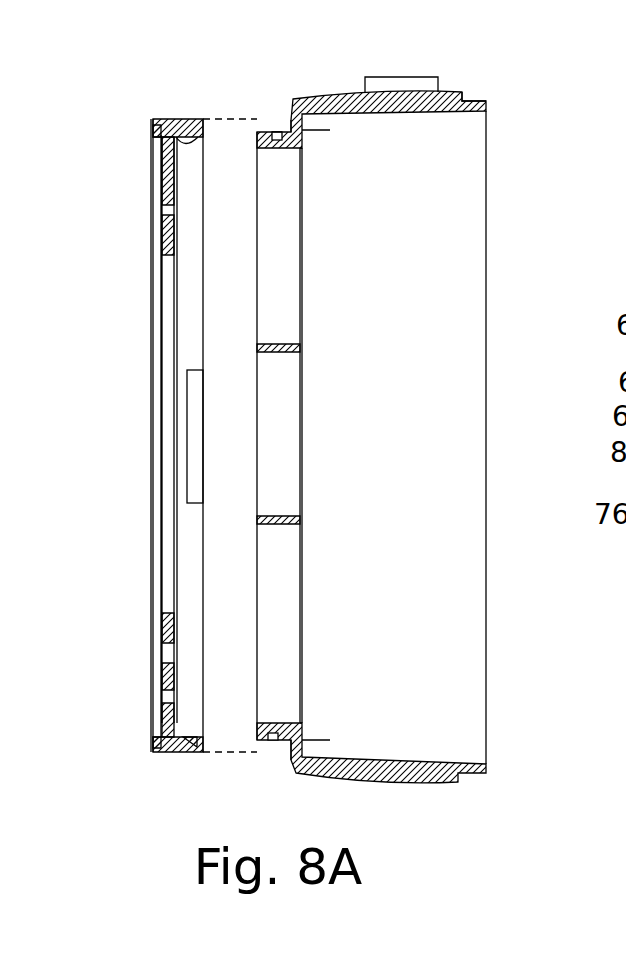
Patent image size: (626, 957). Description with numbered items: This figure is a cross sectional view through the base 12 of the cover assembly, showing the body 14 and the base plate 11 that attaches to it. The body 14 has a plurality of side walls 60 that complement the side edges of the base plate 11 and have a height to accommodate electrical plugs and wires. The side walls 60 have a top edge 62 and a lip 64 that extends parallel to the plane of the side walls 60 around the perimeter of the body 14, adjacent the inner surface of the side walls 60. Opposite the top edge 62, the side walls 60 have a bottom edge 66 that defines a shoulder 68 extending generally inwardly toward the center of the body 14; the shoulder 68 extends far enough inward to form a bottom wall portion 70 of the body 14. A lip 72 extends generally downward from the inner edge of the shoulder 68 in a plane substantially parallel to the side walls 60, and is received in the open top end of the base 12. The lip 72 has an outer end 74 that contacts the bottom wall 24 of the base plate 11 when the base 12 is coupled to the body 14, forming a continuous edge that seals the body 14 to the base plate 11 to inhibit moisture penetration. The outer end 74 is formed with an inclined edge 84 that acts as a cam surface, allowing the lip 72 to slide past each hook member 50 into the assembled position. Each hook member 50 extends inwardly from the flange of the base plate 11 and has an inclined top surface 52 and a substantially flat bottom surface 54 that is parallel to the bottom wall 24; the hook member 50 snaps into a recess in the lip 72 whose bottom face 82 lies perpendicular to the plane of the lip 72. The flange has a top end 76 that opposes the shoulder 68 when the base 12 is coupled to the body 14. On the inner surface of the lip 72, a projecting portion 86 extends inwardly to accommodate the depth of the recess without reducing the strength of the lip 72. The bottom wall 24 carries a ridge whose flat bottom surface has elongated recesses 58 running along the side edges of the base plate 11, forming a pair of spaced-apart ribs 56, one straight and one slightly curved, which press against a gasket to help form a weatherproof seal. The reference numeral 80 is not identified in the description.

The base plate 11 is at (170, 757).
The base 12 is at (520, 215).
The body 14 is at (425, 785).
The bottom wall 24 is at (176, 628).
The hook member 50 is at (163, 178).
The inclined top surface 52 is at (196, 140).
The bottom surface 54 is at (188, 135).
The ribs 56 is at (156, 740).
The recesses 58 is at (152, 128).
The side walls 60 is at (487, 440).
The top edge 62 is at (440, 90).
The lip 64 is at (488, 104).
The bottom edge 66 is at (300, 100).
The shoulder 68 is at (290, 118).
The bottom wall portion 70 is at (303, 130).
The lip 72 is at (302, 150).
The outer end 74 is at (257, 160).
The top end 76 is at (272, 742).
The recess 80 is at (275, 130).
The bottom face 82 is at (278, 130).
The inclined edge 84 is at (255, 138).
The projecting portion 86 is at (288, 415).